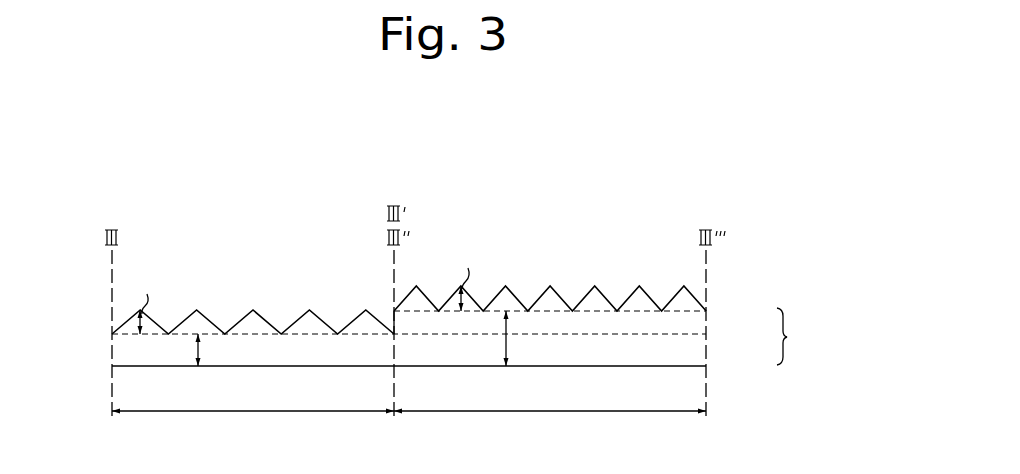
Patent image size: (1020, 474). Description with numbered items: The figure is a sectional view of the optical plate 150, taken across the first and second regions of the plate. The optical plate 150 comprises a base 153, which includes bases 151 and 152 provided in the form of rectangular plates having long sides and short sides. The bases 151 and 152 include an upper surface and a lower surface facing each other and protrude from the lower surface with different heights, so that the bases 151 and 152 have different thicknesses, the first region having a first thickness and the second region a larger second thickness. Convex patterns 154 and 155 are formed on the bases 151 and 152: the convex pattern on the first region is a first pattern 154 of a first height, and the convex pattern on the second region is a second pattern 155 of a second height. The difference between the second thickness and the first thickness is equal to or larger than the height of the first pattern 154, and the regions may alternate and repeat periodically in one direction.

The optical plate 150 is at (221, 247).
The base 151 is at (700, 357).
The base 152 is at (700, 316).
The base 153 is at (801, 336).
The first pattern 154 is at (308, 305).
The second pattern 155 is at (595, 284).